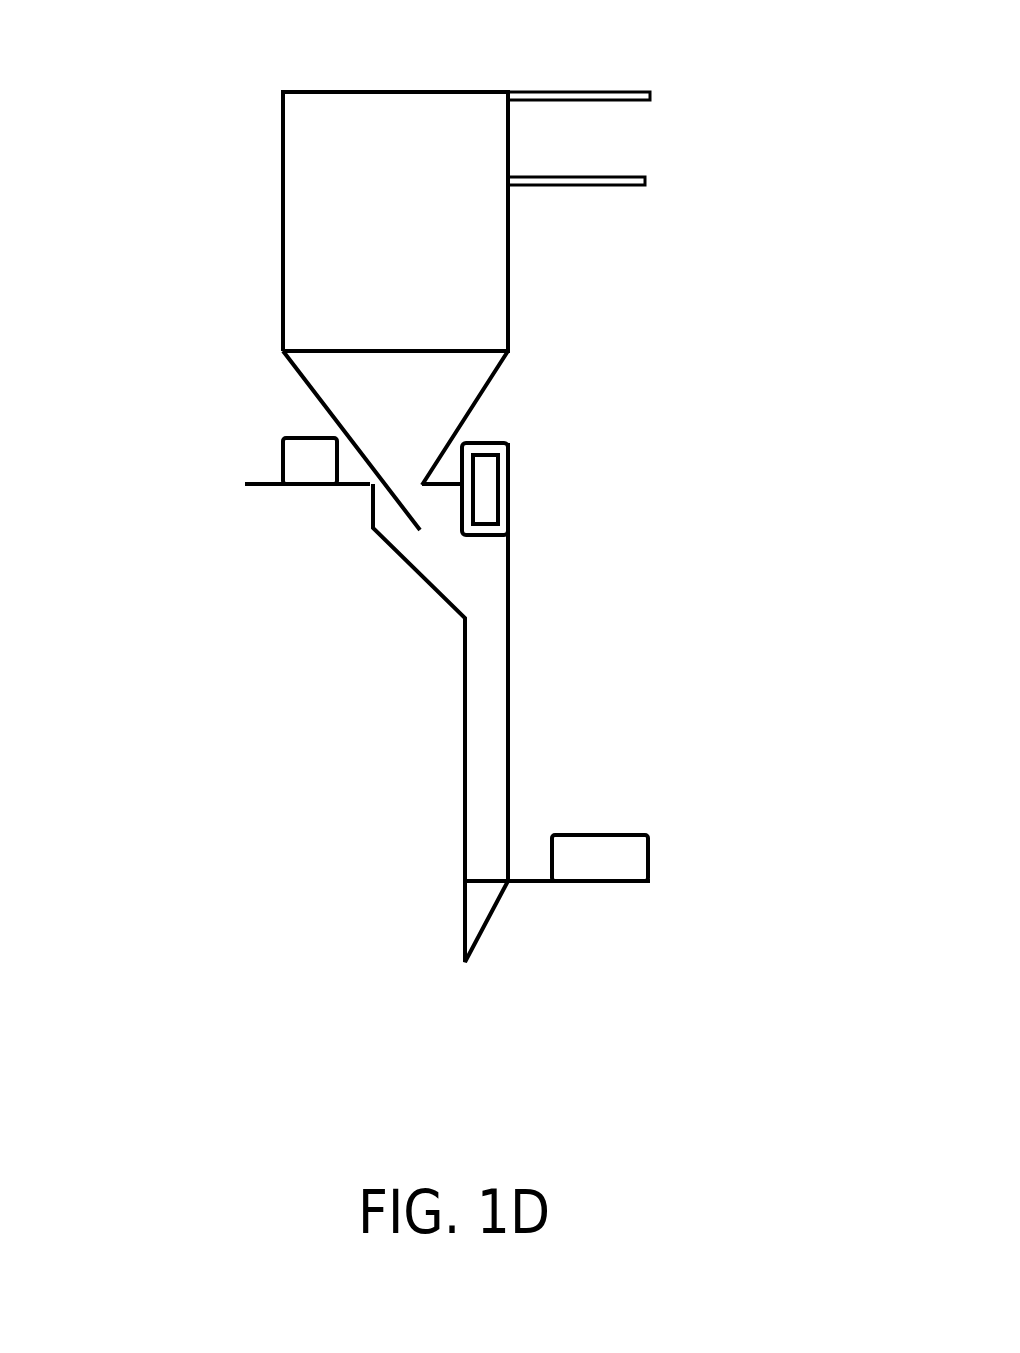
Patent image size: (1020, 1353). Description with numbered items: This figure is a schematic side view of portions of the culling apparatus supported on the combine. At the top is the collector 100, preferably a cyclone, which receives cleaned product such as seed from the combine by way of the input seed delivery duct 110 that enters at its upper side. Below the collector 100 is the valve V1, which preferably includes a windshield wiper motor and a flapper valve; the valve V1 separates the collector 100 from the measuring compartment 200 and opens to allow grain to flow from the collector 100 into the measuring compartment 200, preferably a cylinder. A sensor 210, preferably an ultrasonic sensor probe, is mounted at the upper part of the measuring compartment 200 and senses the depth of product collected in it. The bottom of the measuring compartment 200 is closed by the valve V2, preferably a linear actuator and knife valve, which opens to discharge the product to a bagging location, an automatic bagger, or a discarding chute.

The collector 100 is at (462, 143).
The input seed delivery duct 110 is at (605, 129).
The valve V1 is at (280, 450).
The measuring compartment 200 is at (463, 697).
The sensor 210 is at (510, 493).
The valve V2 is at (613, 835).